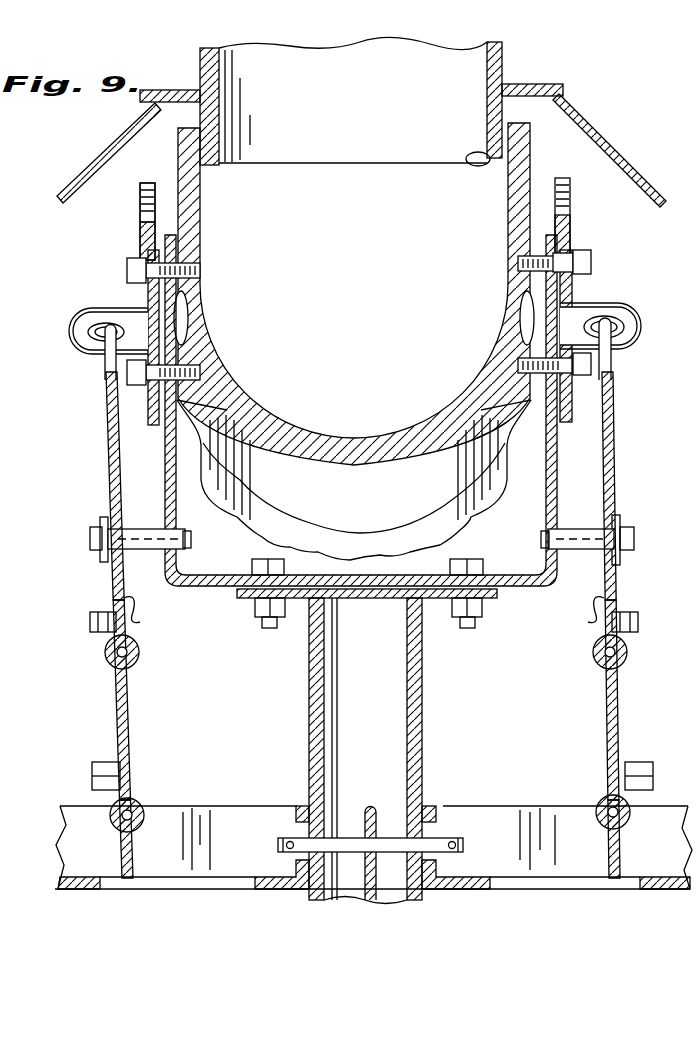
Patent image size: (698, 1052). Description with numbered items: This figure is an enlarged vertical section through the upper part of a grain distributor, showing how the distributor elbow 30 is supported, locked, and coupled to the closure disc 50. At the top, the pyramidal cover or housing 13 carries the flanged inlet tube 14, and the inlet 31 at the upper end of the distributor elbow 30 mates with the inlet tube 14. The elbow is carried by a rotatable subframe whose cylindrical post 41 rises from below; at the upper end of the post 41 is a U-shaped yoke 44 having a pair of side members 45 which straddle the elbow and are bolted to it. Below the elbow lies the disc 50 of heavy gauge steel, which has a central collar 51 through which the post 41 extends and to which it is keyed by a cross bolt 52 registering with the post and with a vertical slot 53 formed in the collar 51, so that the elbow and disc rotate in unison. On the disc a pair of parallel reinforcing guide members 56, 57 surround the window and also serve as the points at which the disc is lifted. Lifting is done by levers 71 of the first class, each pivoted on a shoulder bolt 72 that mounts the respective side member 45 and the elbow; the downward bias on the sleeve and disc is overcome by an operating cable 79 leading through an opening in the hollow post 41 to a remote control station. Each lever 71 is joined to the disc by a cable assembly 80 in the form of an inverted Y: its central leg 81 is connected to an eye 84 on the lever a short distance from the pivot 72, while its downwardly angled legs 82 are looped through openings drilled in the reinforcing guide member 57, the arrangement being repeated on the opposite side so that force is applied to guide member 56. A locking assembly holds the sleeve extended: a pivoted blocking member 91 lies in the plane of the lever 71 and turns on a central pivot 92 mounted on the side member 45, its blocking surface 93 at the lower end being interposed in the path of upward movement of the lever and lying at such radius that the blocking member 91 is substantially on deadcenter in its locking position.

The flanged inlet tube 14 is at (505, 60).
The pyramidal cover or housing 13 is at (92, 170).
The inlet 31 is at (560, 104).
The distributor elbow 30 is at (542, 177).
The side members 45 is at (165, 313).
The U-shaped yoke 44 is at (214, 593).
The cylindrical post 41 is at (423, 732).
The cable 79 is at (370, 812).
The disc 50 is at (60, 850).
The central collar 51 is at (300, 806).
The vertical slot 53 is at (296, 825).
The cross bolt 52 is at (277, 848).
The reinforcing guide member 57 is at (130, 850).
The reinforcing guide member 56 is at (618, 847).
The lever 71 is at (150, 410).
The blocking member 91 is at (140, 205).
The blocking surface 93 is at (147, 182).
The central pivot 92 is at (125, 270).
The eye 84 is at (92, 355).
The shoulder bolt 72 is at (140, 386).
The central leg 81 is at (113, 480).
The downwardly angled leg 82 is at (128, 727).
The cable assembly 80 is at (102, 660).